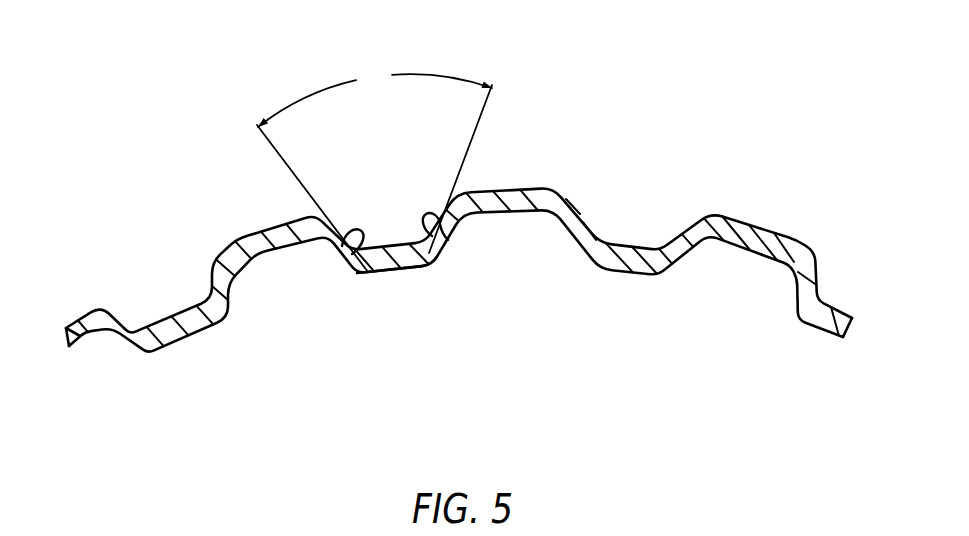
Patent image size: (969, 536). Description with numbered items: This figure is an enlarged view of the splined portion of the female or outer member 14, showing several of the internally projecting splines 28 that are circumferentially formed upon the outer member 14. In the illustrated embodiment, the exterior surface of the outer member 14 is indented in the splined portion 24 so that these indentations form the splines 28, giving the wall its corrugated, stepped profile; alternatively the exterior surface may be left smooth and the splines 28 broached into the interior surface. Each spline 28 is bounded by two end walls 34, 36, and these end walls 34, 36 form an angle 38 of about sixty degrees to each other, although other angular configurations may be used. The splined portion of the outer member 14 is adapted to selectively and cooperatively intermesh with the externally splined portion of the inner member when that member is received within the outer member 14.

The outer member 14 is at (126, 106).
The splined portion 24 is at (766, 224).
The internally projecting splines 28 is at (397, 271).
The end wall 34 is at (452, 252).
The end wall 36 is at (344, 257).
The angle 38 is at (374, 168).